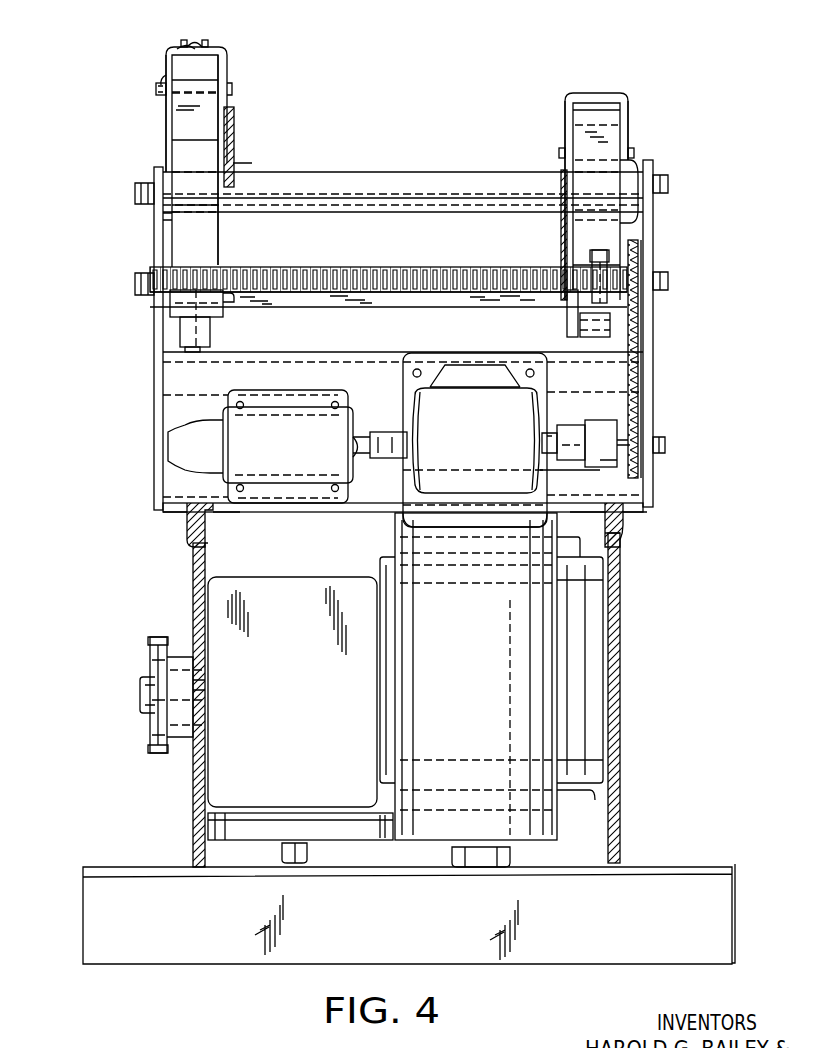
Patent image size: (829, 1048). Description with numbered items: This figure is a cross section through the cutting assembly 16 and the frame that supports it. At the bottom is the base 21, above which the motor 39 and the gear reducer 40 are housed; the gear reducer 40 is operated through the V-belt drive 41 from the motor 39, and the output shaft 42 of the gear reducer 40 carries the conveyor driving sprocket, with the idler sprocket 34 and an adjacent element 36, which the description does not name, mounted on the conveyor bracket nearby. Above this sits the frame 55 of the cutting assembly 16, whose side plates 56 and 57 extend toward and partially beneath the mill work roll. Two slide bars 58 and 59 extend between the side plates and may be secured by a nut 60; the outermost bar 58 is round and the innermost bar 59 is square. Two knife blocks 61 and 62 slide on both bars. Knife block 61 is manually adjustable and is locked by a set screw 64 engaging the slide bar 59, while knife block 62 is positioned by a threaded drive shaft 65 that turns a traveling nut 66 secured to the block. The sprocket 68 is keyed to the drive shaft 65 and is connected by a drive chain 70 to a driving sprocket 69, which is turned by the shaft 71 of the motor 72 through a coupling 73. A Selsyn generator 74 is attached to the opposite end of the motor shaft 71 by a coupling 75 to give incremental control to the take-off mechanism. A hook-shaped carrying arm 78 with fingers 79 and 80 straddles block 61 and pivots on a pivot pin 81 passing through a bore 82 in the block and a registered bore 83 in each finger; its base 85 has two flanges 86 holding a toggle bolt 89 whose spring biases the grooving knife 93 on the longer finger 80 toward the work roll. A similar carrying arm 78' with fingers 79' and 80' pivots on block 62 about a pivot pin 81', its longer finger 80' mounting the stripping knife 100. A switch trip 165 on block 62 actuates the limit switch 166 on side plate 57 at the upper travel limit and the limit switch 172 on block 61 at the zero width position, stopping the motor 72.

The cutting assembly 16 is at (438, 77).
The base 21 is at (650, 868).
The idler sprocket 34 is at (150, 662).
The sprocket shaft 36 is at (150, 640).
The motor 39 is at (491, 690).
The gear reducer 40 is at (292, 692).
The V-belt drive 41 is at (335, 830).
The output shaft 42 is at (140, 695).
The frame 55 is at (148, 466).
The side plate 56 is at (153, 255).
The side plate 57 is at (654, 245).
The slide bar 58 is at (406, 172).
The slide bar 59 is at (403, 308).
The nut 60 is at (136, 188).
The knife block 61 is at (172, 221).
The knife block 62 is at (605, 198).
The set screw 64 is at (185, 340).
The threaded drive shaft 65 is at (380, 267).
The traveling nut 66 is at (590, 255).
The sprocket 68 is at (636, 292).
The driving sprocket 69 is at (640, 470).
The drive chain 70 is at (640, 416).
The motor shaft 71 is at (556, 428).
The motor 72 is at (475, 440).
The coupling 73 is at (618, 420).
The Selsyn generator 74 is at (263, 446).
The coupling 75 is at (384, 458).
The carrying arm 78 is at (227, 157).
The carrying arm 78' is at (625, 183).
The finger 79 is at (140, 113).
The finger 79' is at (654, 130).
The finger 80 is at (253, 160).
The finger 80' is at (545, 196).
The pivot pin 81 is at (132, 94).
The pivot pin 81' is at (625, 143).
The bore 82 is at (190, 95).
The registered bore 83 is at (160, 80).
The base 85 is at (185, 50).
The flange 86 is at (185, 40).
The toggle bolt 89 is at (196, 40).
The grooving knife 93 is at (235, 153).
The stripping knife 100 is at (562, 222).
The switch trip 165 is at (567, 318).
The limit switch 166 is at (595, 330).
The limit switch 172 is at (226, 304).